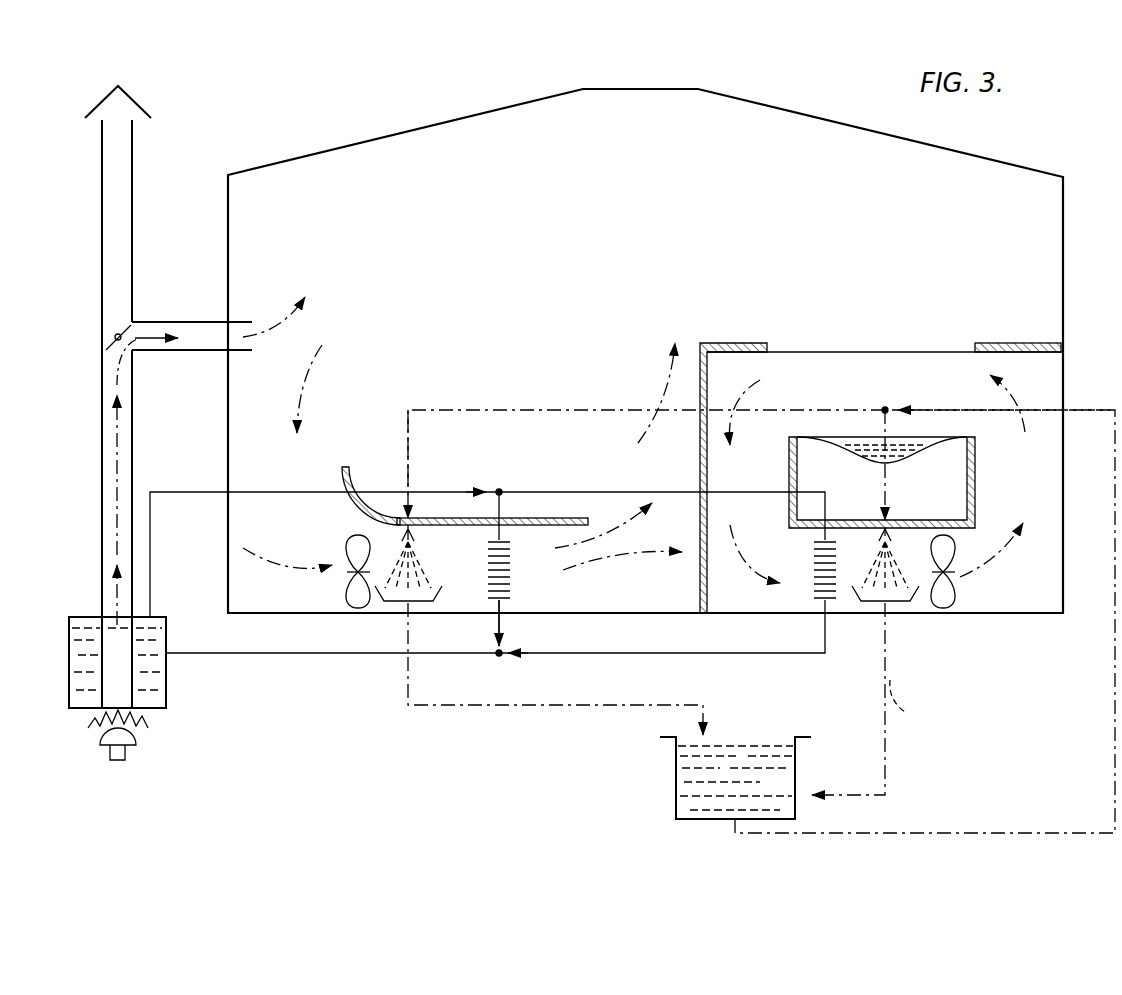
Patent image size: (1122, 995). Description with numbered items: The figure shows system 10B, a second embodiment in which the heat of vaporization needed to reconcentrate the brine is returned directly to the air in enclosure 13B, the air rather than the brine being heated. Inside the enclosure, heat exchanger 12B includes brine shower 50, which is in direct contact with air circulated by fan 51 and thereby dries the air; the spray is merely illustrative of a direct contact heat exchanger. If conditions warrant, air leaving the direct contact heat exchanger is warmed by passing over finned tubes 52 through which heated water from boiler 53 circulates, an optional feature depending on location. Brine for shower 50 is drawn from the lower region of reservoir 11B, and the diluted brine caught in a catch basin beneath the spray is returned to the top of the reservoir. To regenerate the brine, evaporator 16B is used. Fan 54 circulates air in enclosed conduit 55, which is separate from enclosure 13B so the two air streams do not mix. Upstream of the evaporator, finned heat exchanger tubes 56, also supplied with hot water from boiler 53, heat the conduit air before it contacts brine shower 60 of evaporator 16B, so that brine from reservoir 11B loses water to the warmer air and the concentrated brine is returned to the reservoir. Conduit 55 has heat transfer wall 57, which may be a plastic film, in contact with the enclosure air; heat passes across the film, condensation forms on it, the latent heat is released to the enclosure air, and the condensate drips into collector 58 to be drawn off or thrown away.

The system 10B is at (290, 740).
The reservoir 11B is at (676, 798).
The heat exchanger 12B is at (445, 518).
The enclosure 13B is at (1065, 270).
The evaporator 16B is at (917, 602).
The brine shower 50 is at (416, 566).
The fan 51 is at (350, 598).
The finned tubes 52 is at (509, 596).
The boiler 53 is at (162, 689).
The fan 54 is at (953, 600).
The enclosed conduit 55 is at (1005, 343).
The finned heat exchanger tubes 56 is at (815, 600).
The heat transfer wall 57 is at (840, 352).
The collector 58 is at (910, 455).
The brine shower 60 is at (873, 562).